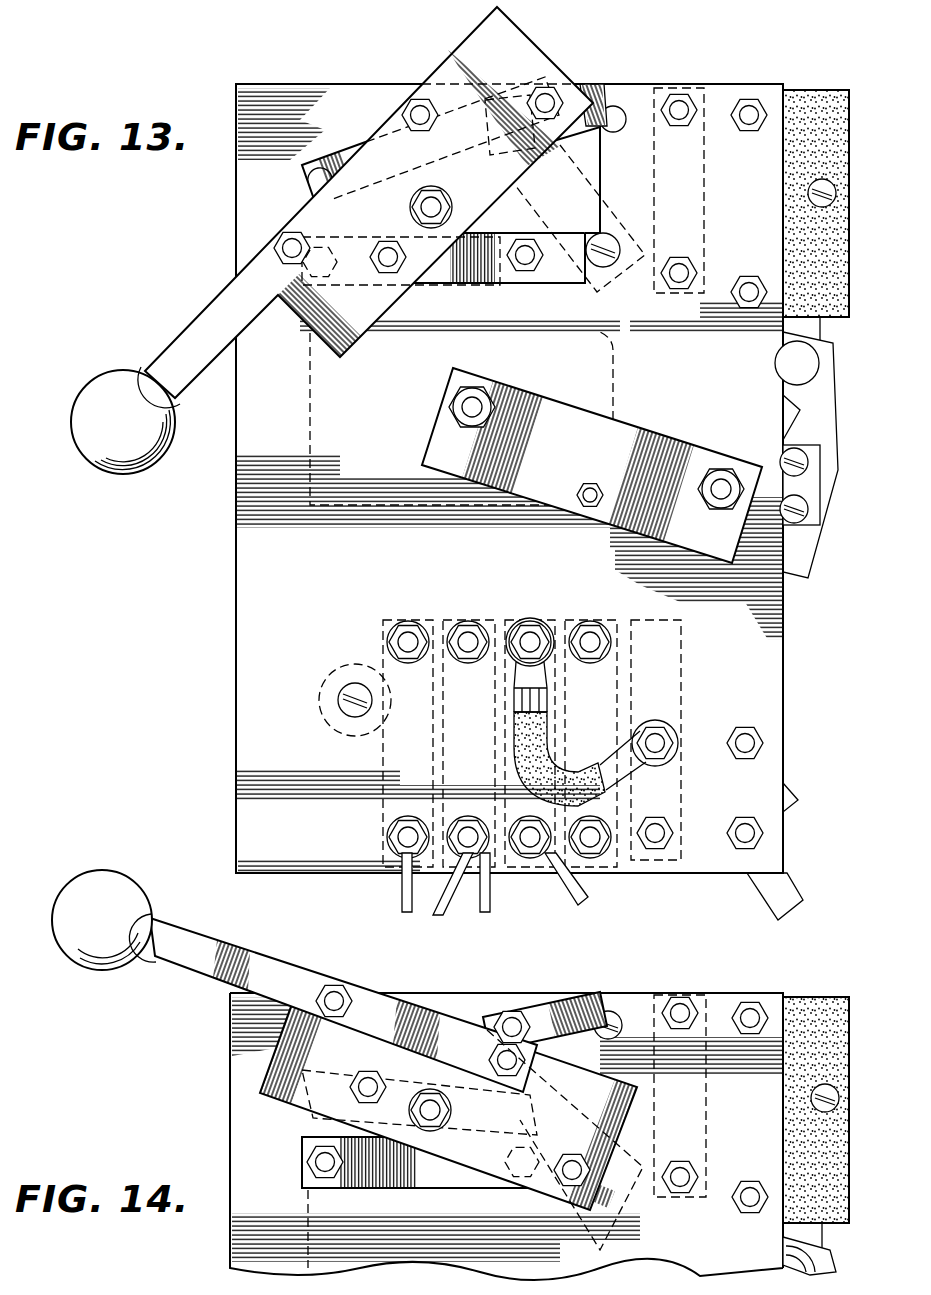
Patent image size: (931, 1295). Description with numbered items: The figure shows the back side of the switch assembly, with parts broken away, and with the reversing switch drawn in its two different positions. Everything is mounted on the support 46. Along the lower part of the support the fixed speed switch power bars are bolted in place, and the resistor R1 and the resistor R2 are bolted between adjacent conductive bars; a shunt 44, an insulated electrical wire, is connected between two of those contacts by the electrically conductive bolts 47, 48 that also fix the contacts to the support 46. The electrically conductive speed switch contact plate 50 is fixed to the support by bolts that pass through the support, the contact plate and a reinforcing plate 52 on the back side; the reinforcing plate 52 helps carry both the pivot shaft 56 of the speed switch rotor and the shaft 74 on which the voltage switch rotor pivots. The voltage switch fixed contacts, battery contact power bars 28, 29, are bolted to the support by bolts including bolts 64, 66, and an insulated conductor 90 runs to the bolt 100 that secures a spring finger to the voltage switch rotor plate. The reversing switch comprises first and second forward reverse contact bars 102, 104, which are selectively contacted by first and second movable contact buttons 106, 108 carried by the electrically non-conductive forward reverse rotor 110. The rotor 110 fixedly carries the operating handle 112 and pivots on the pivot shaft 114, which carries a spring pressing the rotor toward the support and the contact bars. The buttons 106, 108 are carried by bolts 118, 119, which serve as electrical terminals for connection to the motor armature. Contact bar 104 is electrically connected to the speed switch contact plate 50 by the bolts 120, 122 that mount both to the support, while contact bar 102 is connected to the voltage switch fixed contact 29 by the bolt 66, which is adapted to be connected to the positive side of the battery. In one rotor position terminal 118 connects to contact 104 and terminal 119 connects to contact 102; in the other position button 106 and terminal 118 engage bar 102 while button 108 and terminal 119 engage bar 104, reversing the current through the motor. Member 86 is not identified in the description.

In FIG. 13, the support plate 46 is at (236, 668).
In FIG. 14, the support plate 46 is at (230, 1140).
In FIG. 13, the insulating block 86 is at (818, 92).
In FIG. 14, the insulating block 86 is at (818, 997).
In FIG. 13, the bolt 100 is at (808, 368).
In FIG. 14, the bolt 100 is at (790, 1258).
In FIG. 13, the insulated conductor 90 is at (806, 438).
In FIG. 13, the battery contact power bar 28 is at (712, 198).
In FIG. 14, the battery contact power bar 28 is at (715, 1102).
In FIG. 13, the bolt 64 is at (680, 100).
In FIG. 14, the bolt 64 is at (680, 1000).
In FIG. 13, the speed switch contact plate 50 is at (628, 372).
In FIG. 13, the reinforcing plate 52 is at (548, 400).
In FIG. 13, the shaft 74 is at (468, 407).
In FIG. 13, the pivot shaft 56 is at (723, 478).
In FIG. 13, the forward reverse contact bar 104 is at (495, 286).
In FIG. 14, the forward reverse contact bar 104 is at (400, 1188).
In FIG. 13, the forward reverse contact bar 102 is at (340, 132).
In FIG. 14, the forward reverse contact bar 102 is at (565, 995).
In FIG. 13, the movable contact button 108 is at (585, 80).
In FIG. 14, the movable contact button 108 is at (572, 1205).
In FIG. 13, the forward reverse rotor 110 is at (465, 44).
In FIG. 14, the forward reverse rotor 110 is at (268, 1076).
In FIG. 13, the operating handle 112 is at (100, 372).
In FIG. 14, the operating handle 112 is at (103, 870).
In FIG. 13, the movable contact button 106 is at (418, 288).
In FIG. 14, the movable contact button 106 is at (368, 1070).
In FIG. 13, the battery contact power bar 29 is at (625, 210).
In FIG. 14, the battery contact power bar 29 is at (530, 1120).
In FIG. 13, the bolt 66 is at (490, 138).
In FIG. 14, the bolt 66 is at (512, 1012).
In FIG. 13, the bolt 119 is at (548, 95).
In FIG. 14, the bolt 119 is at (575, 1165).
In FIG. 13, the pivot shaft 114 is at (440, 205).
In FIG. 14, the pivot shaft 114 is at (440, 1110).
In FIG. 13, the bolt 118 is at (390, 245).
In FIG. 14, the bolt 118 is at (368, 1087).
In FIG. 13, the bolt 120 is at (528, 243).
In FIG. 14, the bolt 120 is at (522, 1180).
In FIG. 13, the bolt 122 is at (322, 275).
In FIG. 14, the bolt 122 is at (318, 1170).
In FIG. 13, the shunt 44 is at (518, 766).
In FIG. 13, the bolt 48 is at (531, 625).
In FIG. 13, the bolt 47 is at (670, 752).
In FIG. 13, the resistor R1 is at (491, 905).
In FIG. 13, the resistor R2 is at (588, 898).